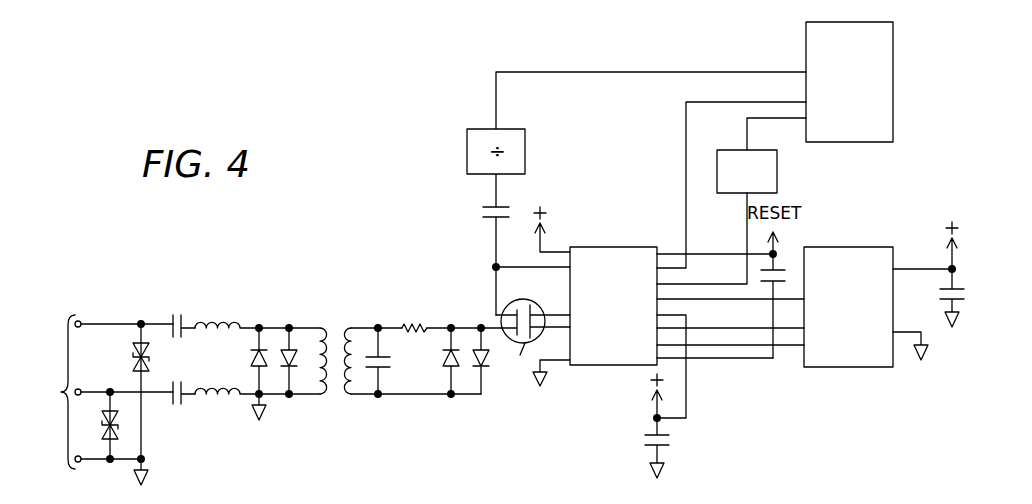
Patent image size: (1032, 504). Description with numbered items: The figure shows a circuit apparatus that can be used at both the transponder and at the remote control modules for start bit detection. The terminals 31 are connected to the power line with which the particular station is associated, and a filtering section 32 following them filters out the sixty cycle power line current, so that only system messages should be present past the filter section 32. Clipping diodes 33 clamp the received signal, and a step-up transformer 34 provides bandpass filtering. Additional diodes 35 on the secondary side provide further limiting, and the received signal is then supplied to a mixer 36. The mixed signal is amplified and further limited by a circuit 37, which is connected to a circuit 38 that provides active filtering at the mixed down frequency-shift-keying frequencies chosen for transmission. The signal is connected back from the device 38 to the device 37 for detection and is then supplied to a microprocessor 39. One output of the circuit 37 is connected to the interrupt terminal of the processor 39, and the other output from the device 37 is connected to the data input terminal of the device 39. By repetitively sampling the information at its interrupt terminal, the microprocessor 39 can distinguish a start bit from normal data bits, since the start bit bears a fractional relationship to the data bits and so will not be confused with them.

The terminals 31 is at (102, 400).
The filtering section 32 is at (214, 371).
The clipping diodes 33 is at (275, 316).
The step-up transformer 34 is at (328, 405).
The additional diodes 35 is at (463, 409).
The mixer 36 is at (525, 339).
The circuit 37 is at (627, 317).
The circuit 38 is at (864, 317).
The microprocessor 39 is at (861, 92).